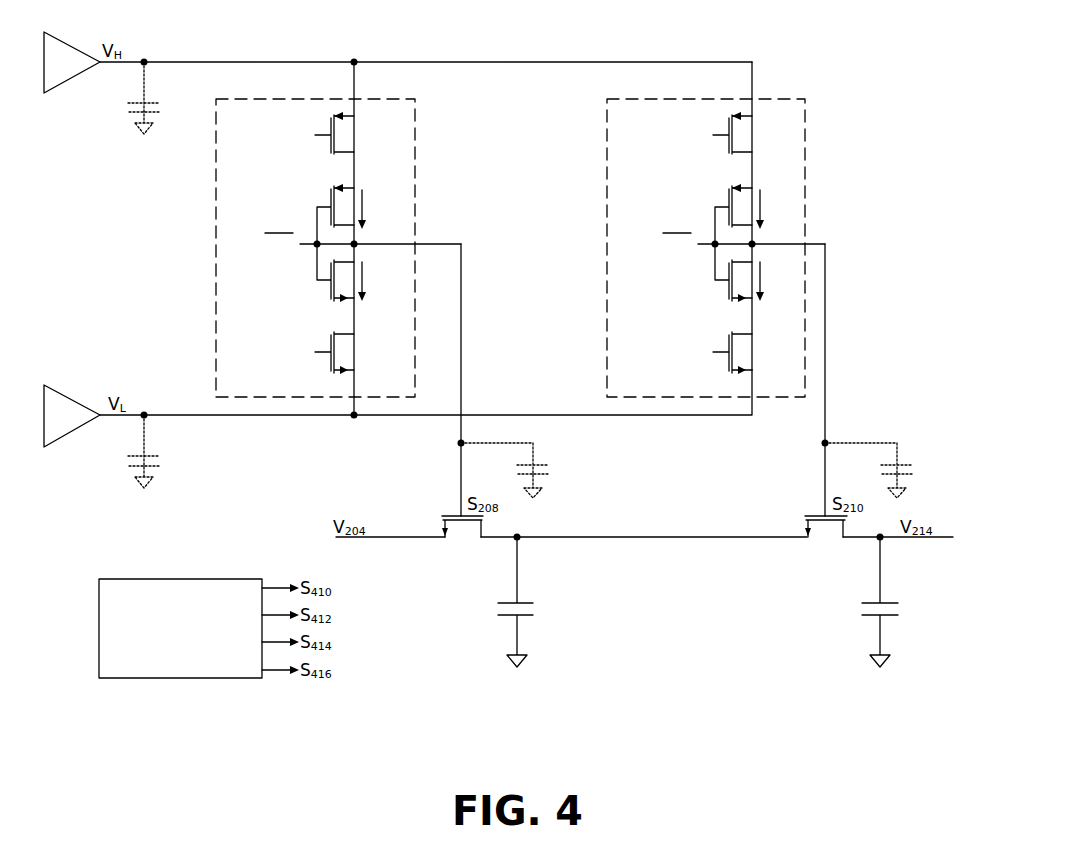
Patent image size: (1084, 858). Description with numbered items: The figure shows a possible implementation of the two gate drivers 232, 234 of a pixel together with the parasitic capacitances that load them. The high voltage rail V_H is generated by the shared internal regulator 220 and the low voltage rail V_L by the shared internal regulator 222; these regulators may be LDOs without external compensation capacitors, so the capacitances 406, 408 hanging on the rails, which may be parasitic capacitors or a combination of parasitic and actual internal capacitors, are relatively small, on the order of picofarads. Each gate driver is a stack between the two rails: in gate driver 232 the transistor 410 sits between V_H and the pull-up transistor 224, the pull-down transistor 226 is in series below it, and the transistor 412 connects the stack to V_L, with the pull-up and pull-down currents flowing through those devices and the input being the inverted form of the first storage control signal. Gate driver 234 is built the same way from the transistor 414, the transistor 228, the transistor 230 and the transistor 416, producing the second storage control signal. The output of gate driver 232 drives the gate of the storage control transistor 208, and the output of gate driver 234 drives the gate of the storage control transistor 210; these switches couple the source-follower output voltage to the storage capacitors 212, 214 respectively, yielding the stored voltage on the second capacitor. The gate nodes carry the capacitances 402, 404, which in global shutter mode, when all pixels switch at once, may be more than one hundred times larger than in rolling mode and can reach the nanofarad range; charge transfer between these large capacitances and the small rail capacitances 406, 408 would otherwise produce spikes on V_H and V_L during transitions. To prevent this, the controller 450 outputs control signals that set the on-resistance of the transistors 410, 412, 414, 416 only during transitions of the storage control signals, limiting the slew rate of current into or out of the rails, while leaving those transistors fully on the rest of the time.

The internal regulator 220 is at (55, 33).
The internal regulator 222 is at (62, 436).
The capacitance 406 is at (161, 112).
The capacitance 408 is at (161, 466).
The gate driver 232 is at (417, 116).
The gate driver 234 is at (807, 116).
The transistor 410 is at (354, 152).
The transistor 412 is at (331, 371).
The transistor 414 is at (752, 152).
The transistor 416 is at (729, 371).
The transistor 224 is at (328, 192).
The transistor 226 is at (329, 299).
The transistor 228 is at (726, 192).
The transistor 230 is at (727, 299).
The capacitance 402 is at (548, 477).
The capacitance 404 is at (912, 477).
The storage control transistor 208 is at (446, 539).
The storage control transistor 210 is at (810, 539).
The storage capacitor 212 is at (530, 616).
The storage capacitor 214 is at (895, 616).
The controller 450 is at (140, 579).